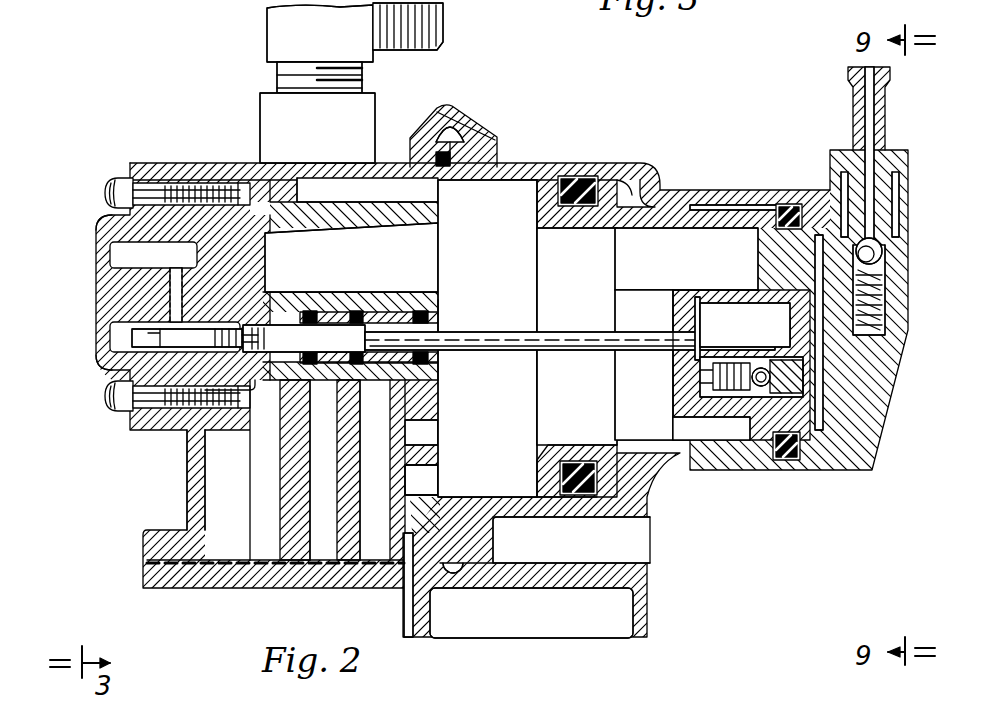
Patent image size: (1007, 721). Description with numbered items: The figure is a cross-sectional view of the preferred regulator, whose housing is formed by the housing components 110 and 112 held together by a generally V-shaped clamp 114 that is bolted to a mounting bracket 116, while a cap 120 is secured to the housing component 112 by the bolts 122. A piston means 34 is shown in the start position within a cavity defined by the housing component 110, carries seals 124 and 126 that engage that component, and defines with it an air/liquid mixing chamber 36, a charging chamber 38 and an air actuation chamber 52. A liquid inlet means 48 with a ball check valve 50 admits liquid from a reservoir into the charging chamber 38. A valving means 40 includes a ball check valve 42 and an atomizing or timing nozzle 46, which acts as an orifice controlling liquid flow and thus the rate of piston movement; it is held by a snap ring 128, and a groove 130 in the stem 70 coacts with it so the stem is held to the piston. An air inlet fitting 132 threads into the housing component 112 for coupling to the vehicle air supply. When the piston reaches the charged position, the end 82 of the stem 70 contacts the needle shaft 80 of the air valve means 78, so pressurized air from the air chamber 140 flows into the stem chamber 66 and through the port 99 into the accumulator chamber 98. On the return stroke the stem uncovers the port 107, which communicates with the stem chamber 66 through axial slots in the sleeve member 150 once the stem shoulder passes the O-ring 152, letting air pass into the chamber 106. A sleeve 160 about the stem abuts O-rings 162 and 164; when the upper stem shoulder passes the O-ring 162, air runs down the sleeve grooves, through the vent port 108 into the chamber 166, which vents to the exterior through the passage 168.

The housing component 110 is at (565, 162).
The housing component 112 is at (235, 165).
The V-shaped clamp 114 is at (456, 135).
The mounting bracket 116 is at (615, 575).
The cap 120 is at (100, 255).
The bolts 122 is at (122, 185).
The seal 124 is at (583, 185).
The seal 126 is at (788, 205).
The snap ring 128 is at (690, 318).
The groove 130 is at (705, 315).
The air inlet fitting 132 is at (265, 18).
The air chamber 140 is at (172, 290).
The sleeve member 150 is at (330, 357).
The O-ring 152 is at (305, 395).
The sleeve 160 is at (437, 320).
The O-ring 162 is at (335, 345).
The O-ring 164 is at (432, 300).
The chamber 166 is at (405, 470).
The passage 168 is at (398, 565).
The piston means 34 is at (712, 204).
The air/liquid mixing chamber 36 is at (512, 195).
The charging chamber 38 is at (820, 380).
The valving means 40 is at (770, 432).
The ball check valve 42 is at (778, 445).
The atomizing nozzle 46 is at (690, 385).
The liquid inlet means 48 is at (908, 150).
The ball check valve 50 is at (882, 255).
The air actuation chamber 52 is at (650, 175).
The stem chamber 66 is at (300, 305).
The stem 70 is at (566, 330).
The air valve means 78 is at (220, 325).
The needle shaft 80 is at (286, 328).
The end 82 is at (345, 328).
The accumulator chamber 98 is at (200, 455).
The port 99 is at (234, 393).
The chamber 106 is at (330, 478).
The port 107 is at (320, 382).
The vent port 108 is at (420, 393).